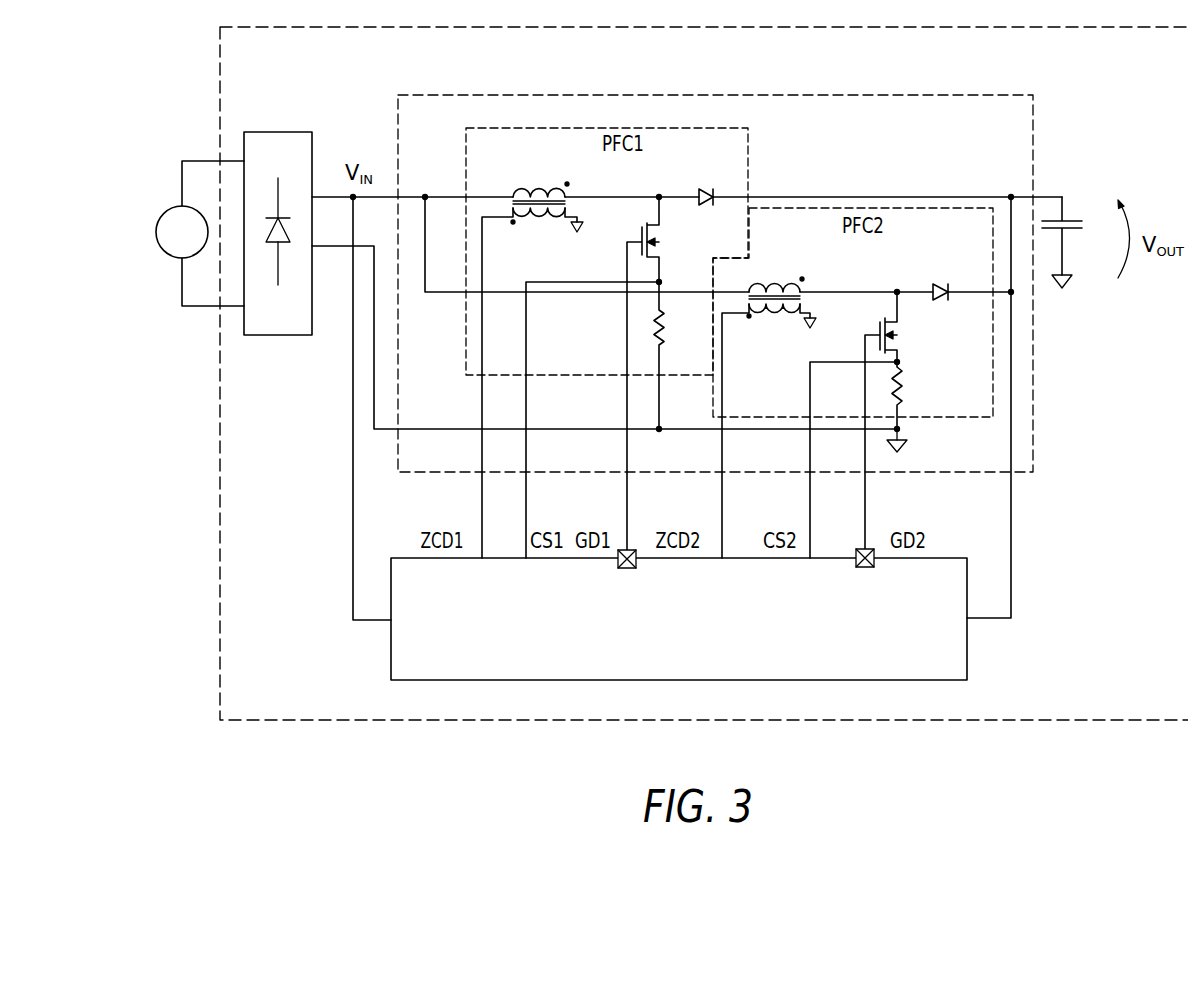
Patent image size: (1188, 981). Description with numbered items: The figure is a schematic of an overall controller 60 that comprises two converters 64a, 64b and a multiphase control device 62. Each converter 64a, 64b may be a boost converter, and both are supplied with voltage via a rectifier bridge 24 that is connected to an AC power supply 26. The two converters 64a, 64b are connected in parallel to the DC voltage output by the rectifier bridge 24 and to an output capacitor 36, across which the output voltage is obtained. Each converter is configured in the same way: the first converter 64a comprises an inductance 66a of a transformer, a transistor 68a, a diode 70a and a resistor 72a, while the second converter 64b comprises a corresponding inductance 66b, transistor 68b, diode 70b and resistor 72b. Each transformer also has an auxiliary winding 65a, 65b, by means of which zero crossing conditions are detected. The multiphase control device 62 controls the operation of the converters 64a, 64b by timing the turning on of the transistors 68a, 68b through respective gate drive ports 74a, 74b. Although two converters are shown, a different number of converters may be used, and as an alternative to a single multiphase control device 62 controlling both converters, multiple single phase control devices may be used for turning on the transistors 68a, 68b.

The rectifier bridge 24 is at (303, 132).
The AC power supply 26 is at (168, 200).
The output capacitor 36 is at (1070, 232).
The overall controller 60 is at (922, 720).
The multiphase control device 62 is at (968, 657).
The converter 64a is at (755, 182).
The converter 64b is at (872, 206).
The auxiliary winding 65a is at (547, 220).
The auxiliary winding 65b is at (785, 313).
The inductance 66a is at (522, 188).
The inductance 66b is at (757, 282).
The transistor 68a is at (662, 242).
The transistor 68b is at (899, 335).
The diode 70a is at (707, 190).
The diode 70b is at (943, 278).
The resistor 72a is at (664, 326).
The resistor 72b is at (902, 382).
The gate drive port 74a is at (631, 570).
The gate drive port 74b is at (868, 570).